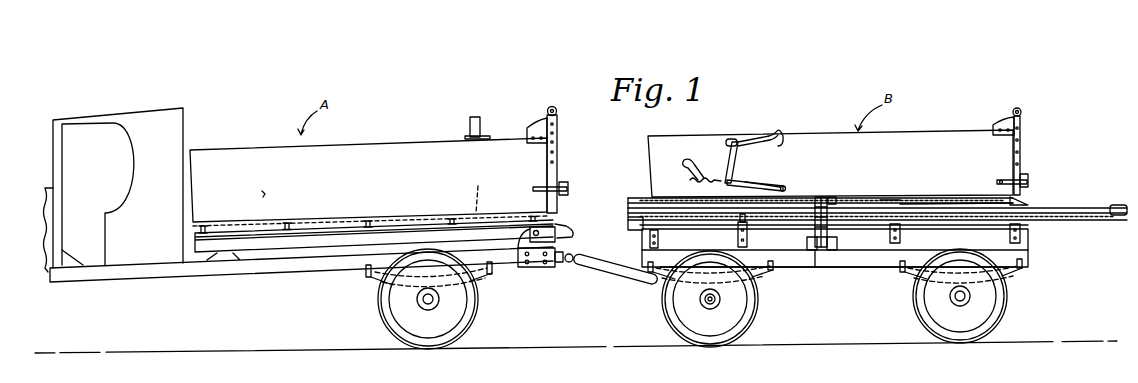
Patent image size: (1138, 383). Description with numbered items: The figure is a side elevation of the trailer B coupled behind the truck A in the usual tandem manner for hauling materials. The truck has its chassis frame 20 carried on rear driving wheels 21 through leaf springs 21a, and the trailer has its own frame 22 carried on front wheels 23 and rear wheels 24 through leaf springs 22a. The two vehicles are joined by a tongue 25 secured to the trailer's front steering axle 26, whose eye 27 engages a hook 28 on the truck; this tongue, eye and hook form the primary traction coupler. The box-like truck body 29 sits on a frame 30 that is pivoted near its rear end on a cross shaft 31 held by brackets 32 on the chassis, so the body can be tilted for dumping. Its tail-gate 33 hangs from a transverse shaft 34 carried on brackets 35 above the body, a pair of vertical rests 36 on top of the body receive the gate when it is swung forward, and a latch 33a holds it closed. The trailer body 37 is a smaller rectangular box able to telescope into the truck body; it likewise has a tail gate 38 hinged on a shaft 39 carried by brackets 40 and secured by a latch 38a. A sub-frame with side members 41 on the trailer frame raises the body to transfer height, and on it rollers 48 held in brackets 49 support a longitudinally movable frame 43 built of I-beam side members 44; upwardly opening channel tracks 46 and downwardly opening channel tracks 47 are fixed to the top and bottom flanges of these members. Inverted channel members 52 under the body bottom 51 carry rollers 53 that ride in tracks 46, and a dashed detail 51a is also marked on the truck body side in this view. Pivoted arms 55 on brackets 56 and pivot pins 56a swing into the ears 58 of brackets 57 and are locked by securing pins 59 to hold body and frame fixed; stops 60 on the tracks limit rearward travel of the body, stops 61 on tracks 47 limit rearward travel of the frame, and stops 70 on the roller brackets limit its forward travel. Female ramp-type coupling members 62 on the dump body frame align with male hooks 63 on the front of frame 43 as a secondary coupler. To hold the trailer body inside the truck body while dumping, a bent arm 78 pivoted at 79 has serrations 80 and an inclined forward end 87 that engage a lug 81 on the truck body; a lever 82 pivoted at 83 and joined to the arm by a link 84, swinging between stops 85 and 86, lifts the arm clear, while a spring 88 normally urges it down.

The chassis frame 20 is at (288, 274).
The rear driving wheels 21 is at (437, 340).
The leaf springs 21a is at (376, 280).
The trailer frame 22 is at (879, 275).
The leaf springs 22a is at (765, 278).
The front wheels 23 is at (758, 314).
The rear wheels 24 is at (1000, 316).
The tongue 25 is at (612, 280).
The front steering axle 26 is at (705, 300).
The eye 27 is at (572, 256).
The hook 28 is at (569, 249).
The truck body 29 is at (392, 149).
The frame 30 is at (312, 247).
The cross shaft 31 is at (530, 245).
The brackets 32 is at (535, 262).
The tail-gate 33 is at (558, 145).
The latch 33a is at (568, 187).
The transverse shaft 34 is at (557, 110).
The brackets 35 is at (540, 128).
The vertical rests 36 is at (468, 124).
The trailer body 37 is at (939, 139).
The tail gate 38 is at (1020, 160).
The latch 38a is at (1030, 178).
The transverse shaft 39 is at (1019, 112).
The brackets 40 is at (1013, 116).
The side members 41 is at (882, 245).
The frame 43 is at (1048, 208).
The I-beam side members 44 is at (1082, 214).
The channel iron members 46 is at (952, 205).
The channel iron members 47 is at (1062, 226).
The non-friction rollers 48 is at (1021, 228).
The brackets 49 is at (901, 236).
The bottom 51 is at (920, 197).
The guide rail end 51a is at (480, 192).
The channel members 52 is at (975, 195).
The non-friction rollers 53 is at (890, 200).
The arms 55 is at (822, 265).
The brackets 56 is at (836, 248).
The pivot pins 56a is at (812, 248).
The brackets 57 is at (817, 197).
The ears 58 is at (830, 197).
The securing pins 59 is at (835, 198).
The stops 60 is at (1020, 200).
The stops 61 is at (648, 236).
The coupling members 62 is at (586, 212).
The coupling members 63 is at (630, 220).
The stops 70 is at (748, 233).
The bent arm 78 is at (770, 186).
The pivot 79 is at (785, 186).
The serrations 80 is at (692, 180).
The lug 81 is at (268, 190).
The lever 82 is at (750, 140).
The pivot 83 is at (732, 138).
The link 84 is at (726, 160).
The stop 85 is at (790, 130).
The stop 86 is at (700, 142).
The inclined end 87 is at (684, 165).
The spring 88 is at (738, 178).